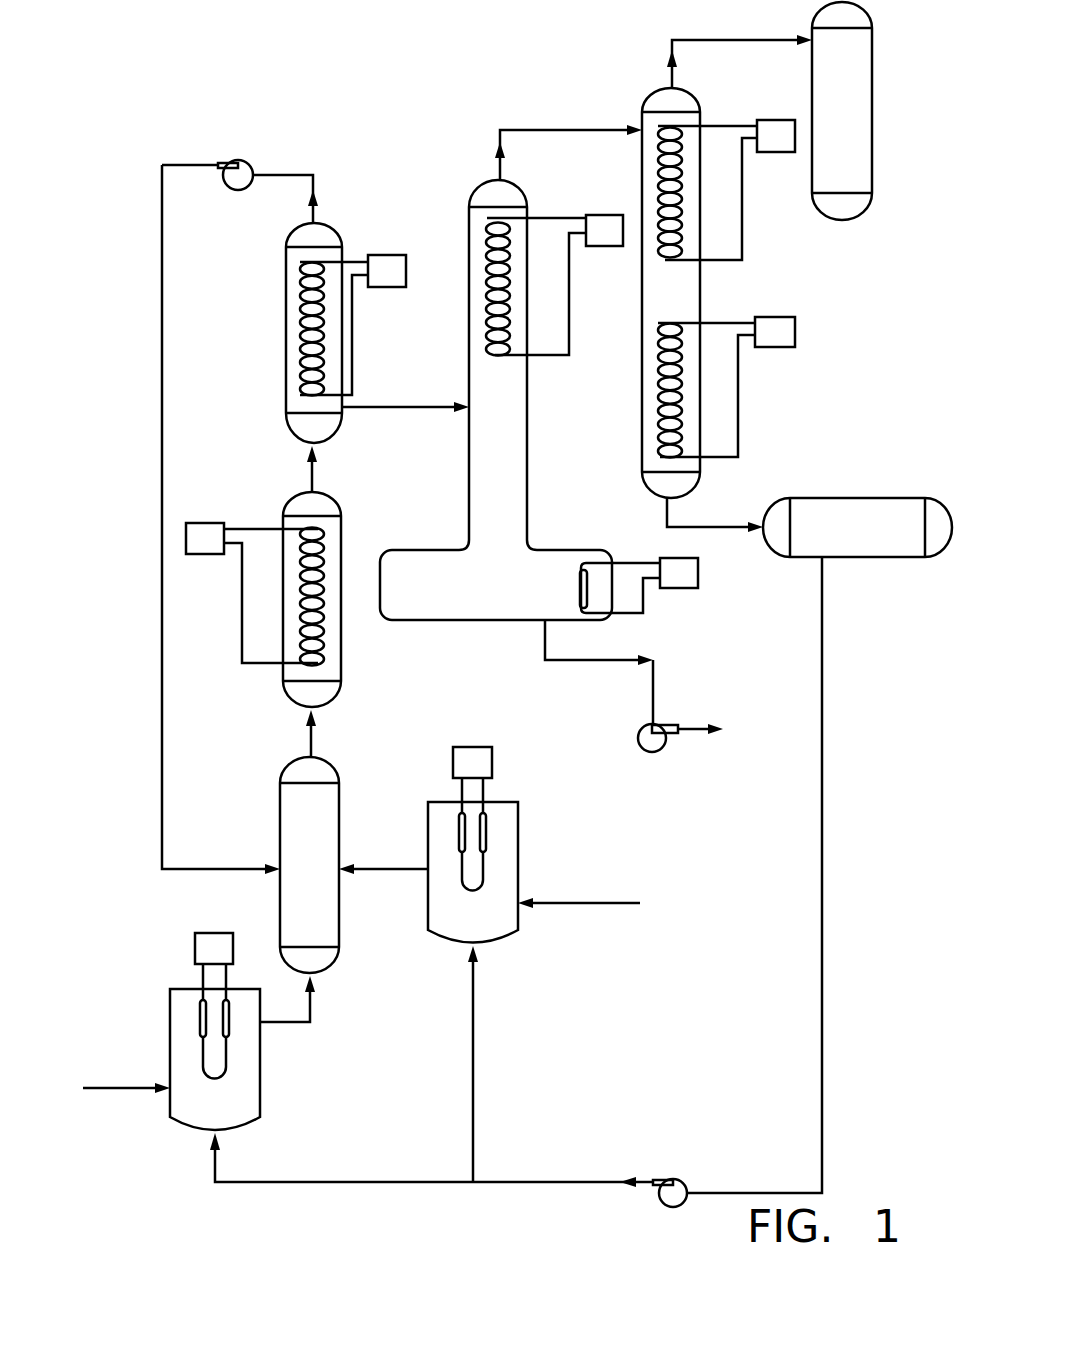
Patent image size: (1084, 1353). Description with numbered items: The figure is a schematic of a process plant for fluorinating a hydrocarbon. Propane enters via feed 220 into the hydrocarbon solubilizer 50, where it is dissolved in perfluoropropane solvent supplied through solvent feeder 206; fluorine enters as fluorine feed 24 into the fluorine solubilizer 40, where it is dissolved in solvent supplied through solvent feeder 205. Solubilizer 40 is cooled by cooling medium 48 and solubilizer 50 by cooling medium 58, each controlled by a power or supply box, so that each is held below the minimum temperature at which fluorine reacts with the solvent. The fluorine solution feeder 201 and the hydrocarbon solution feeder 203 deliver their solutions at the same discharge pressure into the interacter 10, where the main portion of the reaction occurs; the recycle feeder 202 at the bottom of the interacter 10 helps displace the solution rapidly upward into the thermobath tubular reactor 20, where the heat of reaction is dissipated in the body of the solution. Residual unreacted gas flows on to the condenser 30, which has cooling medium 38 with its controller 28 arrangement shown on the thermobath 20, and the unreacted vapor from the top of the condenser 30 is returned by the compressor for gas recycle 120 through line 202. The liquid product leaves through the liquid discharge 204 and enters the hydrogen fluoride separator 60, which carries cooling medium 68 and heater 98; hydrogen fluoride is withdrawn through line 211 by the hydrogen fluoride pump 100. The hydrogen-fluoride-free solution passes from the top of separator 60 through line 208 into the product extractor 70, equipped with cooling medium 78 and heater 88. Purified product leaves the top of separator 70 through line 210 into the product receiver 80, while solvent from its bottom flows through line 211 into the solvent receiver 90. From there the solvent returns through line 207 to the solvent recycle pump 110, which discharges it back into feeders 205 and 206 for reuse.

The interacter 10 is at (309, 865).
The thermobath tubular reactor 20 is at (312, 599).
The condenser 30 is at (314, 333).
The fluorine solubilizer 40 is at (473, 860).
The hydrocarbon solubilizer 50 is at (215, 1047).
The hydrogen fluoride separator 60 is at (496, 400).
The product extractor 70 is at (671, 293).
The product receiver 80 is at (839, 142).
The solvent receiver 90 is at (857, 527).
The hydrogen fluoride pump 100 is at (657, 738).
The solvent recycle pump 110 is at (670, 1180).
The compressor for gas recycle 120 is at (237, 163).
The fluorine feed 24 is at (595, 896).
The temperature controller for vessel 20 28 is at (252, 593).
The cooling medium 38 is at (353, 325).
The cooling medium 48 is at (472, 762).
The cooling medium 58 is at (214, 948).
The cooling medium 68 is at (555, 285).
The cooling medium 78 is at (726, 190).
The heater 88 is at (726, 387).
The heater 98 is at (639, 585).
The fluorine solution feeder 201 is at (383, 858).
The recycle feeder 202 is at (240, 519).
The hydrocarbon solution feeder 203 is at (287, 1016).
The liquid discharge 204 is at (387, 569).
The solvent feeder 205 is at (501, 1064).
The solvent feeder 206 is at (431, 1172).
The line 207 is at (754, 875).
The line 208 is at (568, 144).
The line 210 is at (739, 50).
The line 211 is at (654, 611).
The propane feed 220 is at (111, 1097).